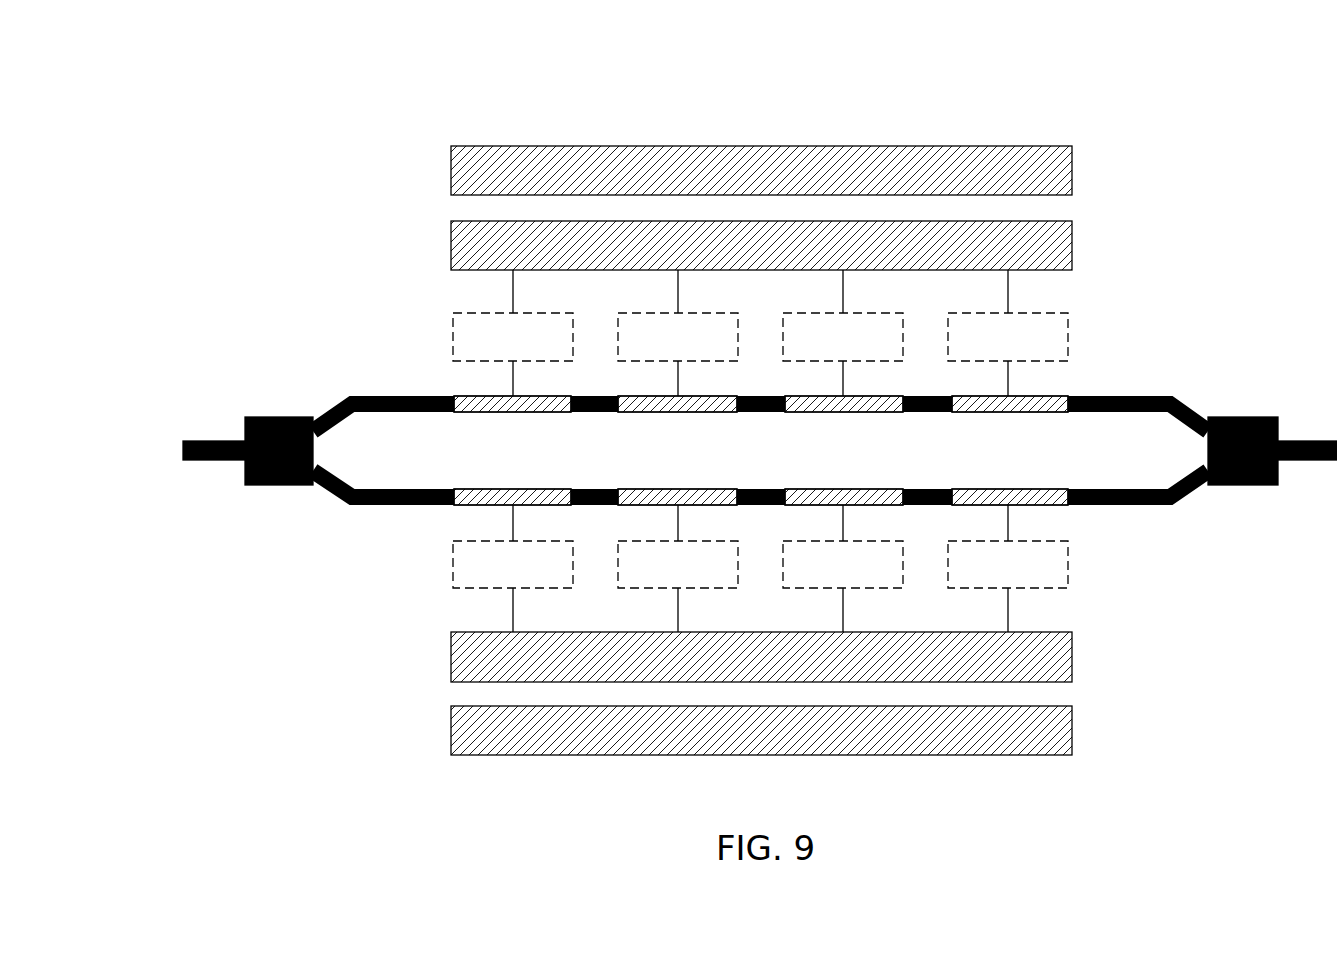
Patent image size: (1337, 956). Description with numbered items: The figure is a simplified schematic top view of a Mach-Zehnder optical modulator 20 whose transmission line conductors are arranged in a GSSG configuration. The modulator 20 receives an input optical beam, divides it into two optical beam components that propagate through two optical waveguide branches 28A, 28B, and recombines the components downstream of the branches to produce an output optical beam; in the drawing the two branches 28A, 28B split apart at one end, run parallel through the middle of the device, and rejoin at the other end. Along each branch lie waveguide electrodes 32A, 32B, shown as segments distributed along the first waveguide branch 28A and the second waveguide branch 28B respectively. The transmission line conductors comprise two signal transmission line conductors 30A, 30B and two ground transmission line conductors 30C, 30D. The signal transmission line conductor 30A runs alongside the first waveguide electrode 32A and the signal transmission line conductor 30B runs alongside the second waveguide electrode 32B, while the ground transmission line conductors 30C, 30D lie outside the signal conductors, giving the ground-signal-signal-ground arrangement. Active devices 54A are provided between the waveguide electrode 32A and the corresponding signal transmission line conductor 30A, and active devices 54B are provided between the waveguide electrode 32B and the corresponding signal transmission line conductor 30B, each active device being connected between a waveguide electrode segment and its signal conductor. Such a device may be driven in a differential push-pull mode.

The Mach-Zehnder optical modulator 20 is at (298, 57).
The optical waveguide branch 28A is at (1190, 410).
The optical waveguide branch 28B is at (1193, 490).
The signal transmission line conductor 30A is at (1060, 246).
The signal transmission line conductor 30B is at (1060, 661).
The ground transmission line conductor 30C is at (1014, 146).
The ground transmission line conductor 30D is at (987, 757).
The waveguide electrode 32A is at (486, 397).
The waveguide electrode 32B is at (486, 505).
The active devices 54A is at (452, 337).
The active devices 54B is at (452, 565).